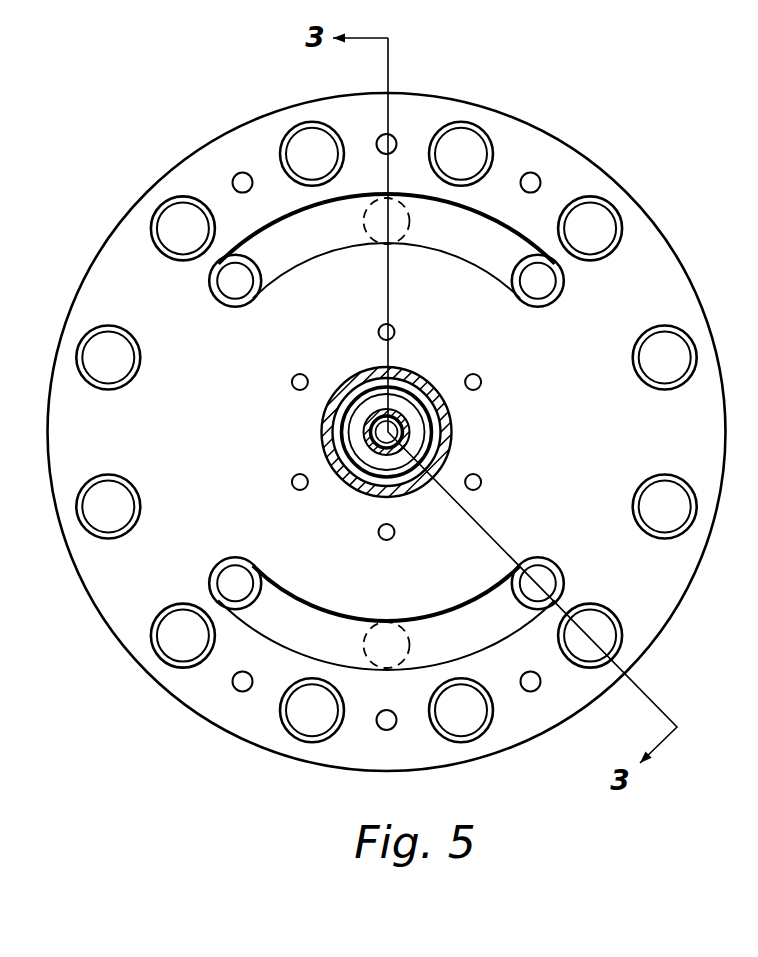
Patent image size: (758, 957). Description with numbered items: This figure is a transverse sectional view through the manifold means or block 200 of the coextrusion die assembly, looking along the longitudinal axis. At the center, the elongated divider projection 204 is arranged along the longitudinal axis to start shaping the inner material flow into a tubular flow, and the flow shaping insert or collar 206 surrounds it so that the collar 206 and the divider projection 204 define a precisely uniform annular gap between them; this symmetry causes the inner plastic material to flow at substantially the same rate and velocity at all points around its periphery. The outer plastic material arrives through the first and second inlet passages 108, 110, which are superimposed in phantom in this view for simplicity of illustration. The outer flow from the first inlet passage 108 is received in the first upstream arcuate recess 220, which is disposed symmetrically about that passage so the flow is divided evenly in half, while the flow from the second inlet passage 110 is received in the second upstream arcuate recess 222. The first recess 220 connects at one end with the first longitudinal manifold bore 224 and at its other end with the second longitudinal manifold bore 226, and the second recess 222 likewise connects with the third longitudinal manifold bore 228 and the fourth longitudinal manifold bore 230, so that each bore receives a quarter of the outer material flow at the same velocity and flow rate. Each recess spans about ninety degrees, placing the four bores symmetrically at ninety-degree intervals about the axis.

The manifold means or block 200 is at (616, 165).
The first upstream arcuate recess 220 is at (313, 247).
The second upstream arcuate recess 222 is at (293, 620).
The first longitudinal manifold bore 224 is at (230, 286).
The second longitudinal manifold bore 226 is at (540, 283).
The third longitudinal manifold bore 228 is at (535, 585).
The fourth longitudinal manifold bore 230 is at (237, 583).
The first inlet passage 108 is at (412, 240).
The second inlet passage 110 is at (393, 632).
The divider projection 204 is at (412, 425).
The flow shaping insert or collar 206 is at (443, 447).